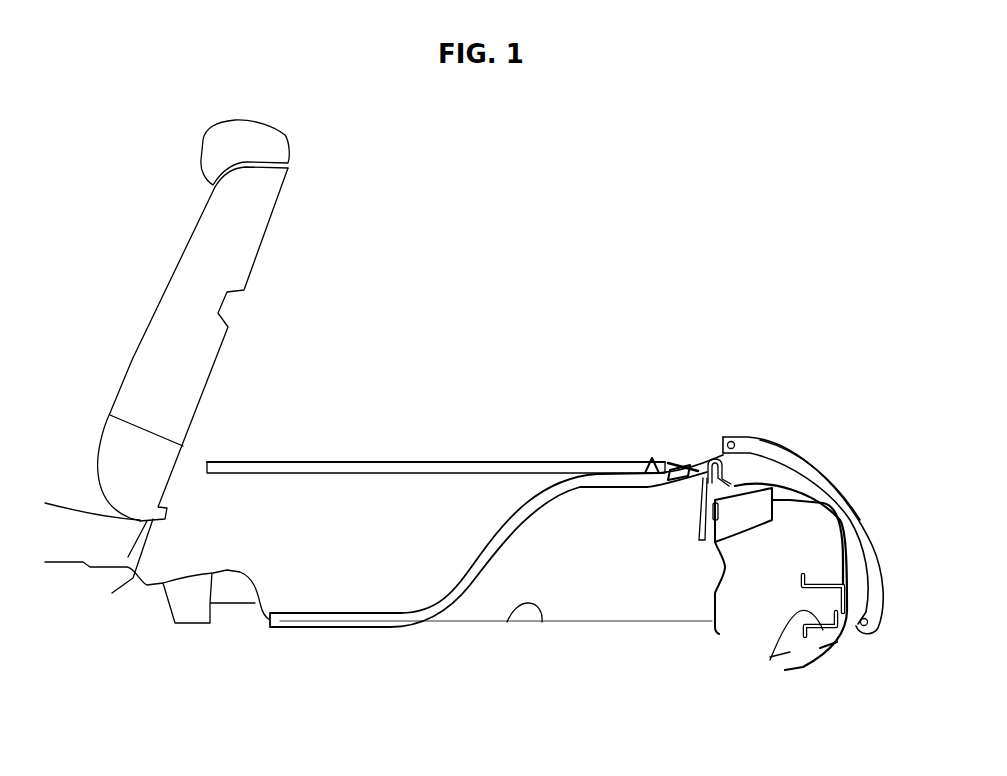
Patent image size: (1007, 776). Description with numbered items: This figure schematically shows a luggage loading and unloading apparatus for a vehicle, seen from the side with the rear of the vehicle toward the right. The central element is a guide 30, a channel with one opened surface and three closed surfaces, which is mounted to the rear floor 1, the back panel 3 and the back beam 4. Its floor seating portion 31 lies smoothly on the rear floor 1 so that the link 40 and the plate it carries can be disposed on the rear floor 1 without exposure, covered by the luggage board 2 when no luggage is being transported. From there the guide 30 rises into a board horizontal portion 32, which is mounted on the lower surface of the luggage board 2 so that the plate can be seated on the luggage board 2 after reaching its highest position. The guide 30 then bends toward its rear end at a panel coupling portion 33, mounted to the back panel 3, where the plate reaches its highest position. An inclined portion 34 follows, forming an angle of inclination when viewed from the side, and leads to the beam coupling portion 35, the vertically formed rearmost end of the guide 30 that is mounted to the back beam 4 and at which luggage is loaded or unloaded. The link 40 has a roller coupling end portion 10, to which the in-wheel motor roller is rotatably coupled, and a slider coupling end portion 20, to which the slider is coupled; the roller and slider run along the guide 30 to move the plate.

The rear floor 1 is at (542, 622).
The luggage board 2 is at (425, 462).
The back panel 3 is at (735, 512).
The back beam 4 is at (770, 660).
The roller coupling end portion 10 is at (732, 437).
The slider coupling end portion 20 is at (877, 627).
The guide 30 is at (462, 563).
The floor seating portion 31 is at (335, 613).
The board horizontal portion 32 is at (598, 477).
The panel coupling portion 33 is at (710, 458).
The inclined portion 34 is at (790, 492).
The beam coupling portion 35 is at (848, 620).
The link 40 is at (810, 465).